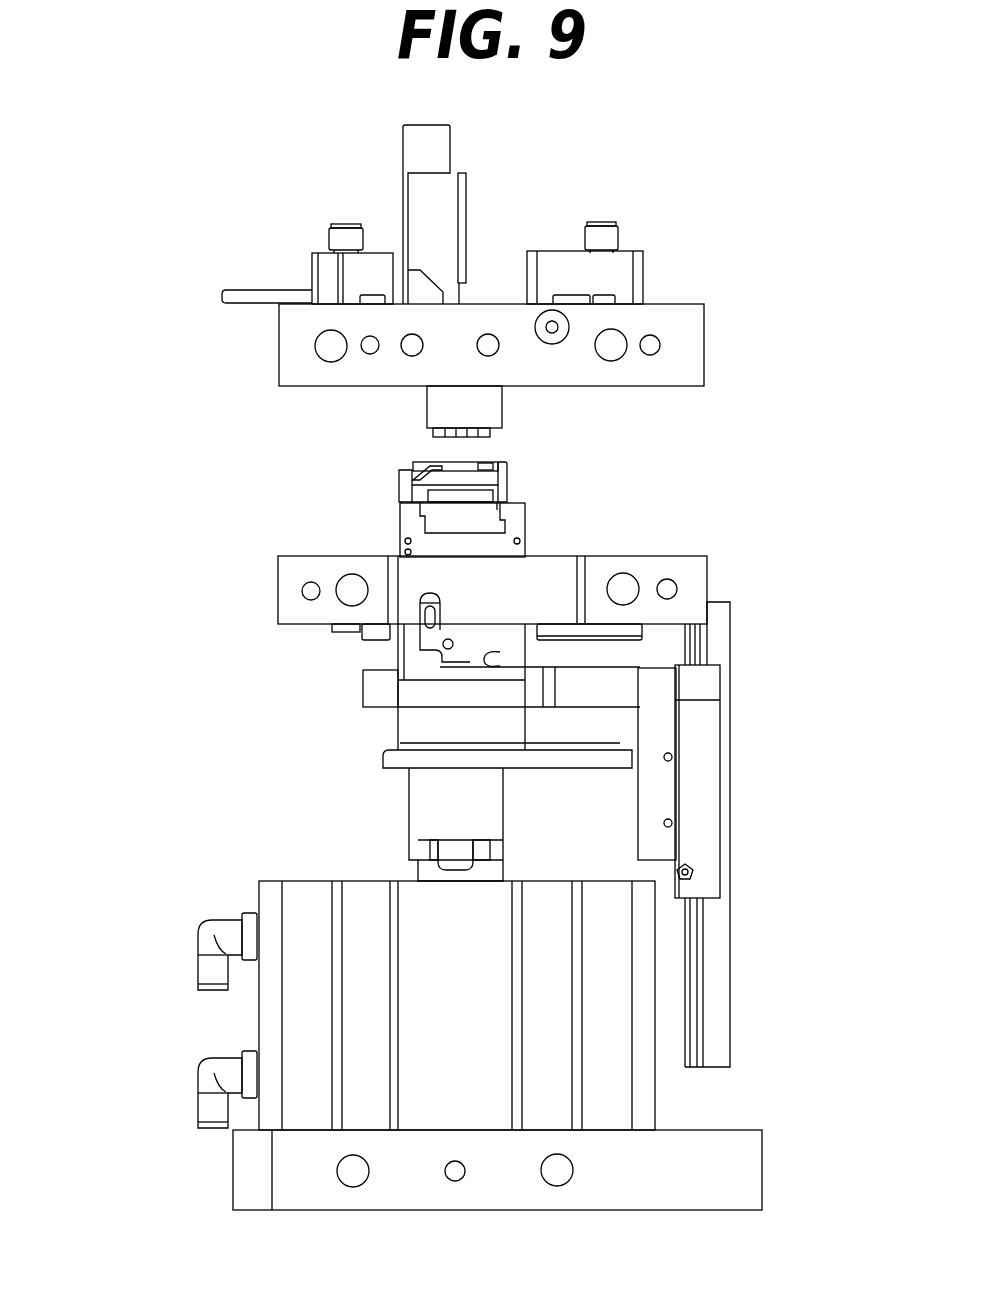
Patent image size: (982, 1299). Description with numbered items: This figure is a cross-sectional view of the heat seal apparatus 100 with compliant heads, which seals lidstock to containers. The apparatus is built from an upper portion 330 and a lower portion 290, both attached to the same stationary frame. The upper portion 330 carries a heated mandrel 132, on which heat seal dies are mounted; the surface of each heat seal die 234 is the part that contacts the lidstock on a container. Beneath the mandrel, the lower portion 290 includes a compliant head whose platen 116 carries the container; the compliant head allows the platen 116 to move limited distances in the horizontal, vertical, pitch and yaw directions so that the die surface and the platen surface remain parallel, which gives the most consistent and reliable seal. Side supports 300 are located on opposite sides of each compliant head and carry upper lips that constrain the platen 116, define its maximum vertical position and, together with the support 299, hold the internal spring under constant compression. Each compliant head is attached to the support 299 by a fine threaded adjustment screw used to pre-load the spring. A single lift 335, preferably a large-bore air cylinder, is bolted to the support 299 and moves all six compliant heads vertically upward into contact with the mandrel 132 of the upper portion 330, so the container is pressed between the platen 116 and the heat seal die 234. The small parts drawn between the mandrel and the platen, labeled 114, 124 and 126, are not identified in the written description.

The heat seal apparatus 100 is at (134, 272).
The upper portion 330 is at (792, 117).
The lower portion 290 is at (792, 523).
The heated mandrel 132 is at (503, 417).
The heat seal die 234 is at (490, 442).
The blade wedge 126 is at (425, 470).
The blade plate 124 is at (418, 467).
The blade carriage 114 is at (507, 482).
The platen 116 is at (452, 512).
The side support 300 is at (440, 667).
The support 299 is at (432, 678).
The lift 335 is at (442, 792).